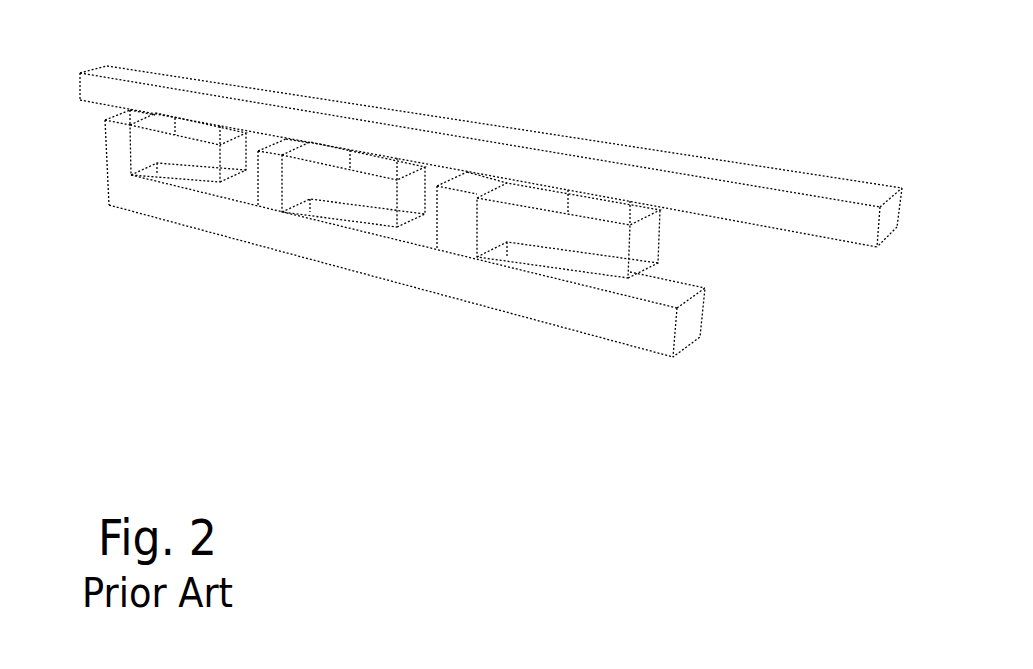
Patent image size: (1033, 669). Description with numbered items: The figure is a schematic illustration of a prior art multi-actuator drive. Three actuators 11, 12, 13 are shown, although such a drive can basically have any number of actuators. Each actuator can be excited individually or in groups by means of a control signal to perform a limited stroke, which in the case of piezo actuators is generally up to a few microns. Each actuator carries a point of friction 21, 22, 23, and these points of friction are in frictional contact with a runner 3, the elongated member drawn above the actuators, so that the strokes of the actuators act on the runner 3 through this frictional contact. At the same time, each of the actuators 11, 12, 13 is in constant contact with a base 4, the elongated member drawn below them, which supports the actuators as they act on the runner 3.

The actuator 11 is at (177, 176).
The actuator 12 is at (334, 214).
The actuator 13 is at (525, 258).
The point of friction 21 is at (207, 122).
The point of friction 22 is at (378, 155).
The point of friction 23 is at (612, 195).
The runner 3 is at (783, 170).
The base 4 is at (107, 173).